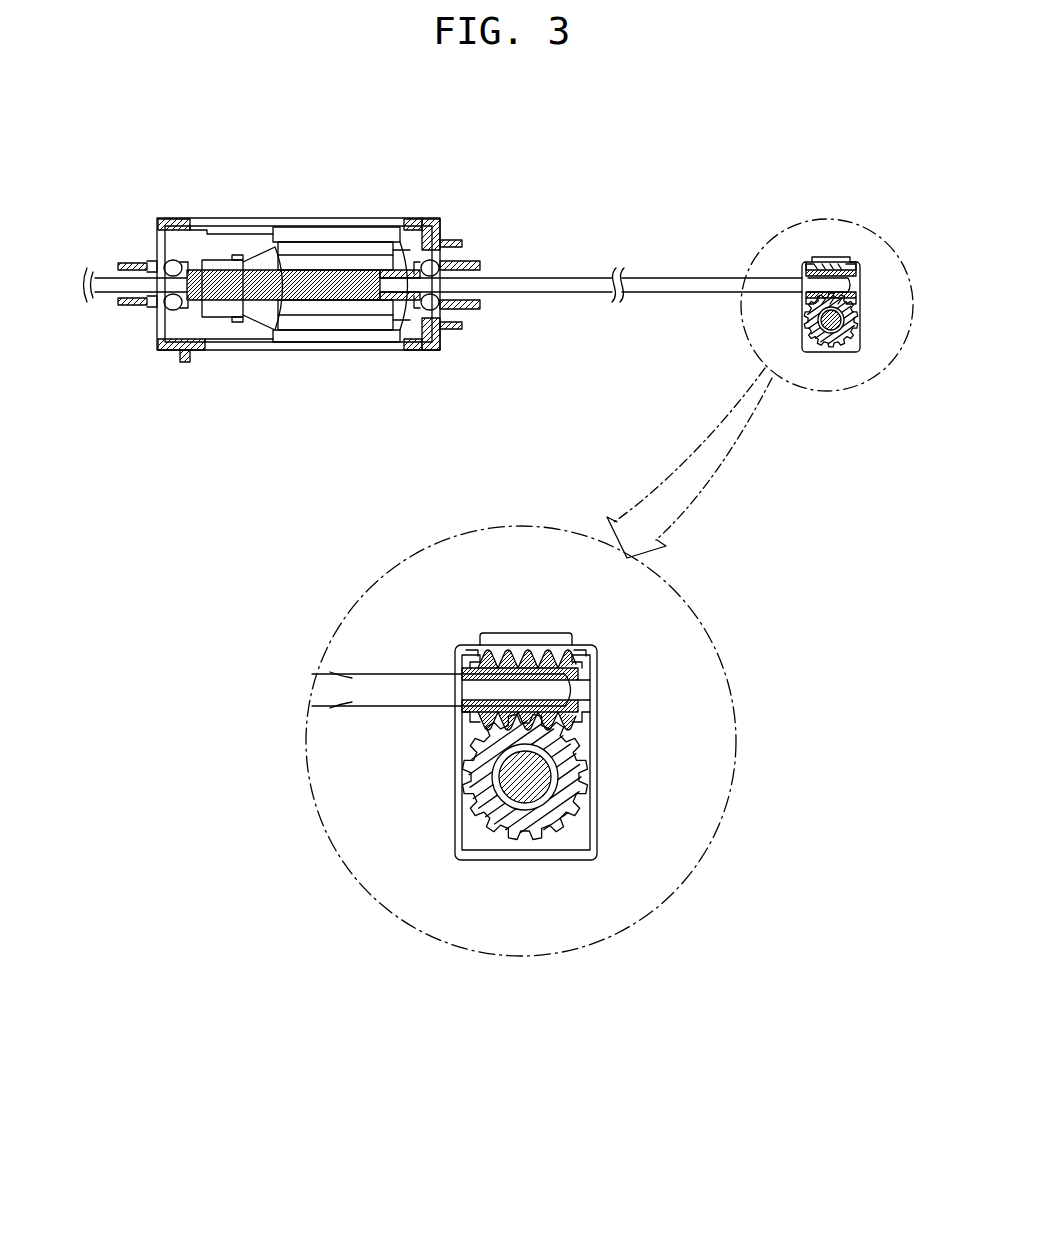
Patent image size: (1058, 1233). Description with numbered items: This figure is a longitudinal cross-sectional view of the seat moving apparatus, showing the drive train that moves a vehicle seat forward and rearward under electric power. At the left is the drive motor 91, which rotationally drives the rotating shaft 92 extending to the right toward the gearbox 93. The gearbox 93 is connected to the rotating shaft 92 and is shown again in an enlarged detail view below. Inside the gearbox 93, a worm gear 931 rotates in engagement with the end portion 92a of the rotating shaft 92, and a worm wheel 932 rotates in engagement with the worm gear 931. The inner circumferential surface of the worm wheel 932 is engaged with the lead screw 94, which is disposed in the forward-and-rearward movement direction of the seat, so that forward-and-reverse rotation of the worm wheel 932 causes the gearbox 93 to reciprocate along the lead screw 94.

The drive motor 91 is at (281, 218).
The rotating shaft 92 is at (640, 278).
The end portion of the rotating shaft 92a is at (800, 276).
The gearbox 93 is at (822, 262).
The worm gear 931 is at (846, 262).
The worm wheel 932 is at (818, 350).
The lead screw 94 is at (840, 352).